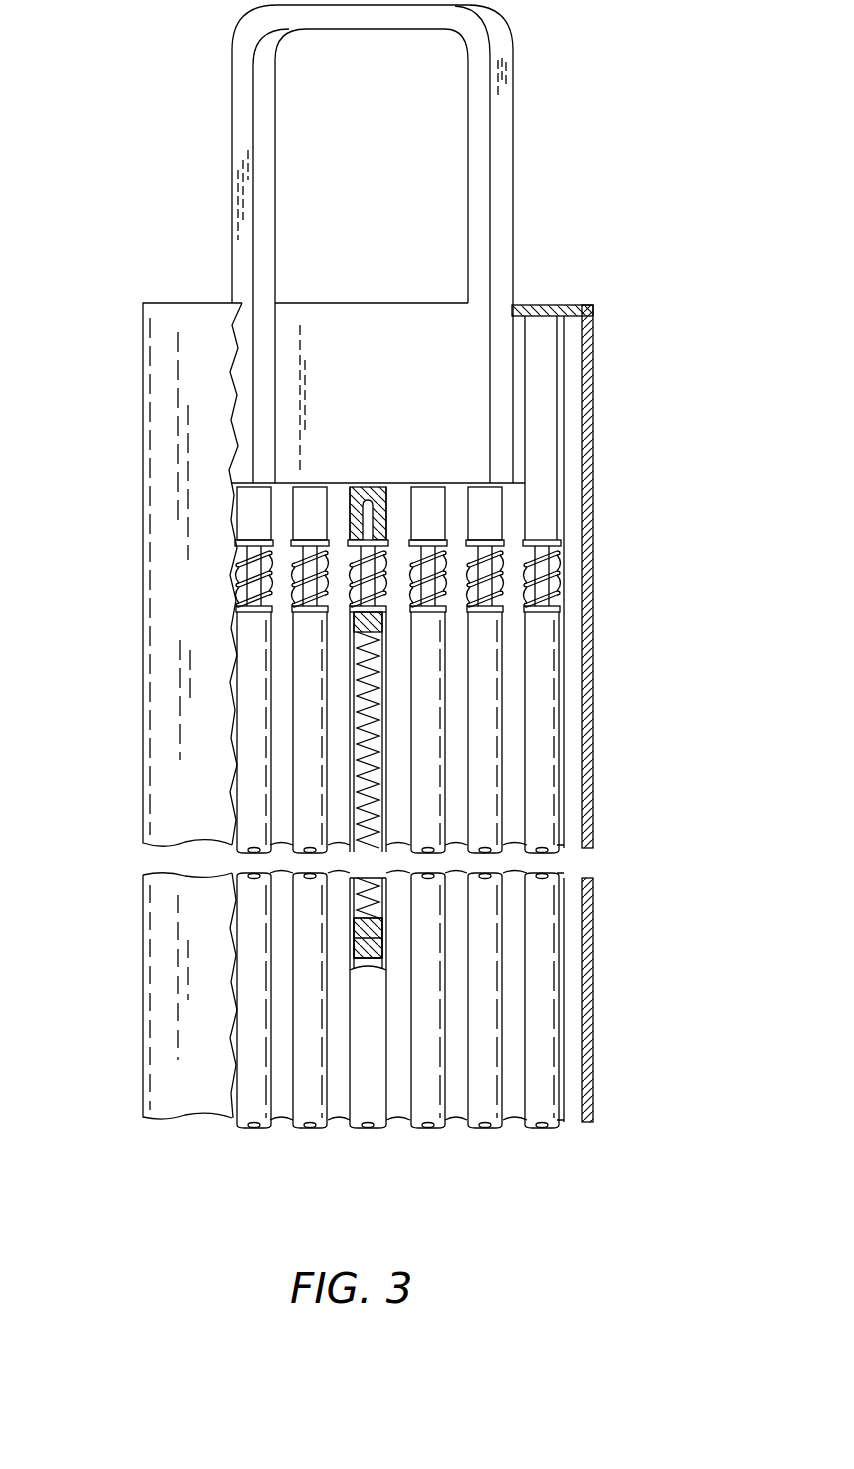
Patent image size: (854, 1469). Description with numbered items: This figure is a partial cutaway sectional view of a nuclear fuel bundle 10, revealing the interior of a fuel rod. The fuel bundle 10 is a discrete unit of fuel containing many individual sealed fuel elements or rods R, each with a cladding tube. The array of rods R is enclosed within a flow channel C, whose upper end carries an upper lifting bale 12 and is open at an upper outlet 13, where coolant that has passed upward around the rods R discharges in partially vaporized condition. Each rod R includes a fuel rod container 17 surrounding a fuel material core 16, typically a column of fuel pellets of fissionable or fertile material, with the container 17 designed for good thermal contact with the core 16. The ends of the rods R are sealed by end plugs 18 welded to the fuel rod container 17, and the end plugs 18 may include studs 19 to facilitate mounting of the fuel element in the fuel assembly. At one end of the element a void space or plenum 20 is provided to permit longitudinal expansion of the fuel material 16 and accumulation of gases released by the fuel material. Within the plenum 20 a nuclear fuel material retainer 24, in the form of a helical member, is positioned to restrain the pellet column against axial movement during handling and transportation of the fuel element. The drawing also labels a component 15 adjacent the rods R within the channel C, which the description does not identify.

The nuclear fuel bundle 10 is at (615, 138).
The upper lifting bale 12 is at (514, 45).
The upper outlet 13 is at (362, 305).
The pins 15 is at (505, 527).
The fuel material core 16 is at (350, 928).
The fuel rod container 17 is at (350, 777).
The end plug 18 is at (389, 606).
The stud 19 is at (553, 568).
The plenum 20 is at (352, 812).
The nuclear fuel material retainer 24 is at (352, 683).
The fuel rod R is at (293, 725).
The flow channel C is at (588, 640).